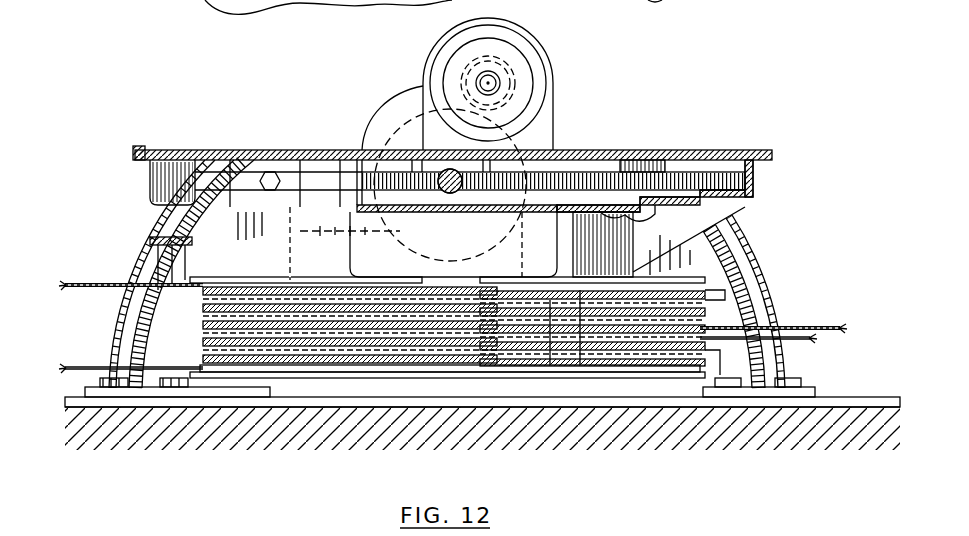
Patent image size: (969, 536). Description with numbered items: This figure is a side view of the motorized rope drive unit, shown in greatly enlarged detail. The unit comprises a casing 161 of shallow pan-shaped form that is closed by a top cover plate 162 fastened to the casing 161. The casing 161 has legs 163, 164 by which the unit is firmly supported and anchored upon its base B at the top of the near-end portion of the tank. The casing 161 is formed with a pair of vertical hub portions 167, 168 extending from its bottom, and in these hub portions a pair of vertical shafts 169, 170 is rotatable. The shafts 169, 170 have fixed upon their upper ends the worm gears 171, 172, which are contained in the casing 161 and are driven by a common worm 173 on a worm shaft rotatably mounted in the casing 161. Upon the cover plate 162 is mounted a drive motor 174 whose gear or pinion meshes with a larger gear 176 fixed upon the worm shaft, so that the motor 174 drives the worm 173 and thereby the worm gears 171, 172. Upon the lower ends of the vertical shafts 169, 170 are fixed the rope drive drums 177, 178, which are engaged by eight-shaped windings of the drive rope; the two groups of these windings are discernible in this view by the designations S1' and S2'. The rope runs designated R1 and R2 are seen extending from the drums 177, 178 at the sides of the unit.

The casing 161 is at (755, 189).
The top cover plate 162 is at (690, 150).
The leg 163 is at (195, 202).
The leg 164 is at (118, 325).
The vertical hub portion 167 is at (268, 168).
The vertical hub portion 168 is at (571, 255).
The vertical shaft 169 is at (398, 231).
The vertical shaft 170 is at (637, 247).
The worm gear 171 is at (366, 148).
The worm gear 172 is at (640, 176).
The worm 173 is at (455, 194).
The drive motor 174 is at (546, 71).
The gear 176 is at (378, 112).
The rope drive drum 177 is at (362, 407).
The rope drive drum 178 is at (565, 380).
The base B is at (230, 406).
The rope R1 is at (818, 320).
The rope R2 is at (812, 358).
The group of eight-shaped windings S1' is at (721, 301).
The group of eight-shaped windings S2' is at (759, 429).